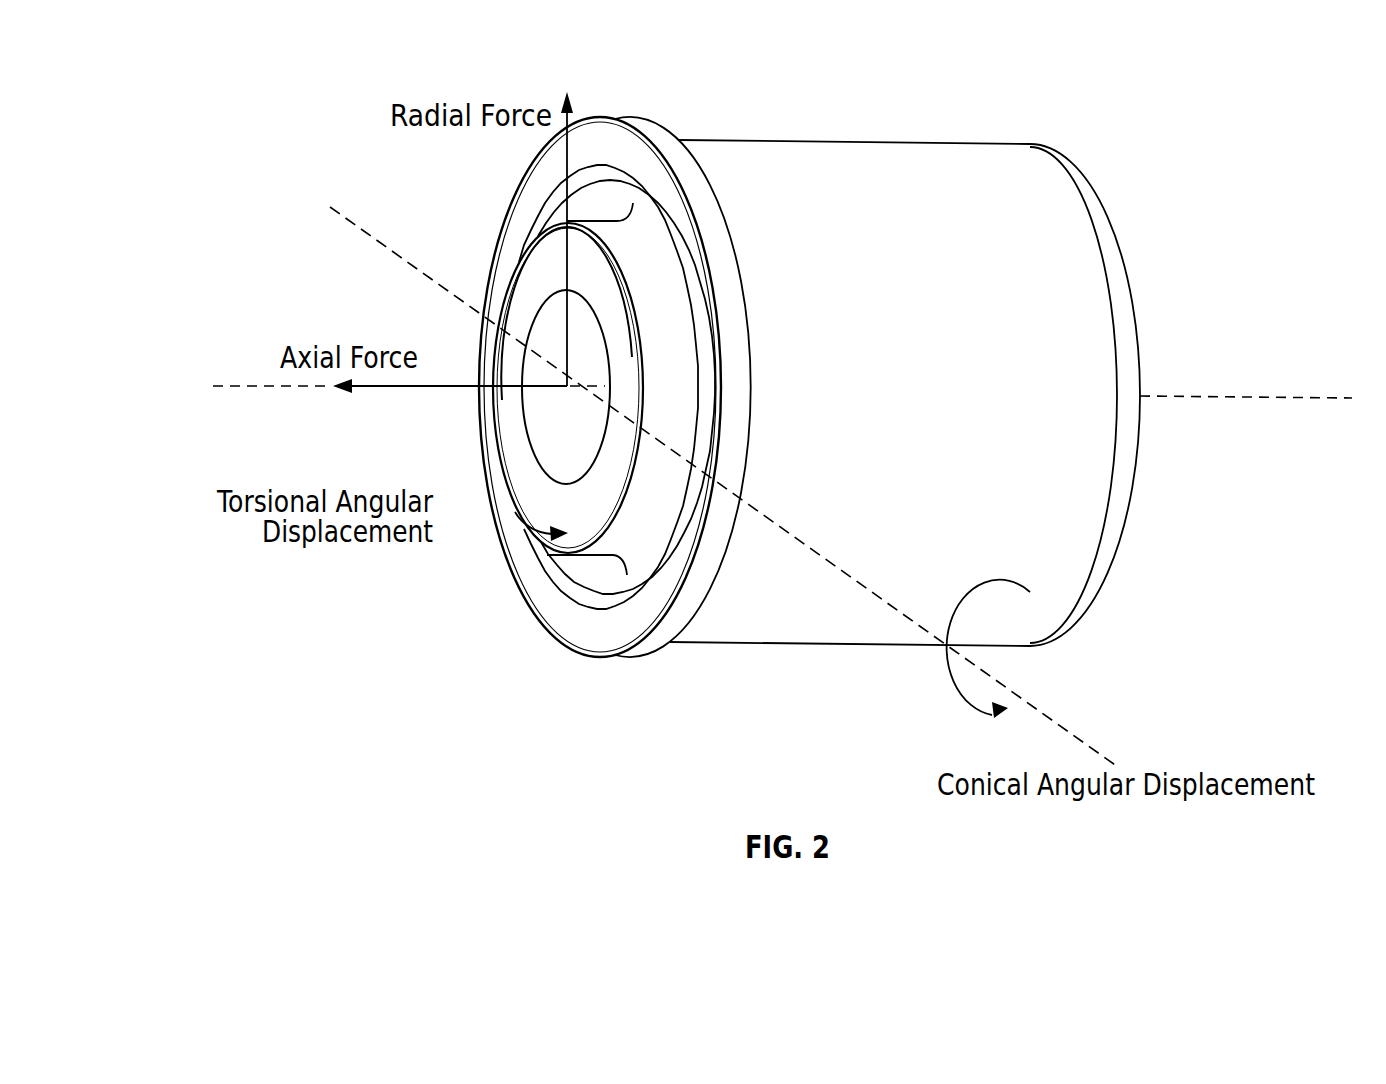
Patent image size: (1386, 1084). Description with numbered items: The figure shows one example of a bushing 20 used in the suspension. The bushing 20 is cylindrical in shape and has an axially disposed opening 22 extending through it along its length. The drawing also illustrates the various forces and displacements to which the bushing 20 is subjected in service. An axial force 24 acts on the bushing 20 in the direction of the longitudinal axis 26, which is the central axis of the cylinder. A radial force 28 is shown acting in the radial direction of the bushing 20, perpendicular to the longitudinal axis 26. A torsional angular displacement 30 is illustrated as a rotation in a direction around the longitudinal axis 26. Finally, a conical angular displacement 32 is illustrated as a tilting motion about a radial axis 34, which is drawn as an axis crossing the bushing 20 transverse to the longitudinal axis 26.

The bushing 20 is at (915, 140).
The axially disposed opening 22 is at (575, 323).
The axial force 24 is at (458, 382).
The longitudinal axis 26 is at (252, 388).
The radial force 28 is at (565, 197).
The torsional angular displacement 30 is at (500, 430).
The conical angular displacement 32 is at (945, 670).
The radial axis 34 is at (795, 540).